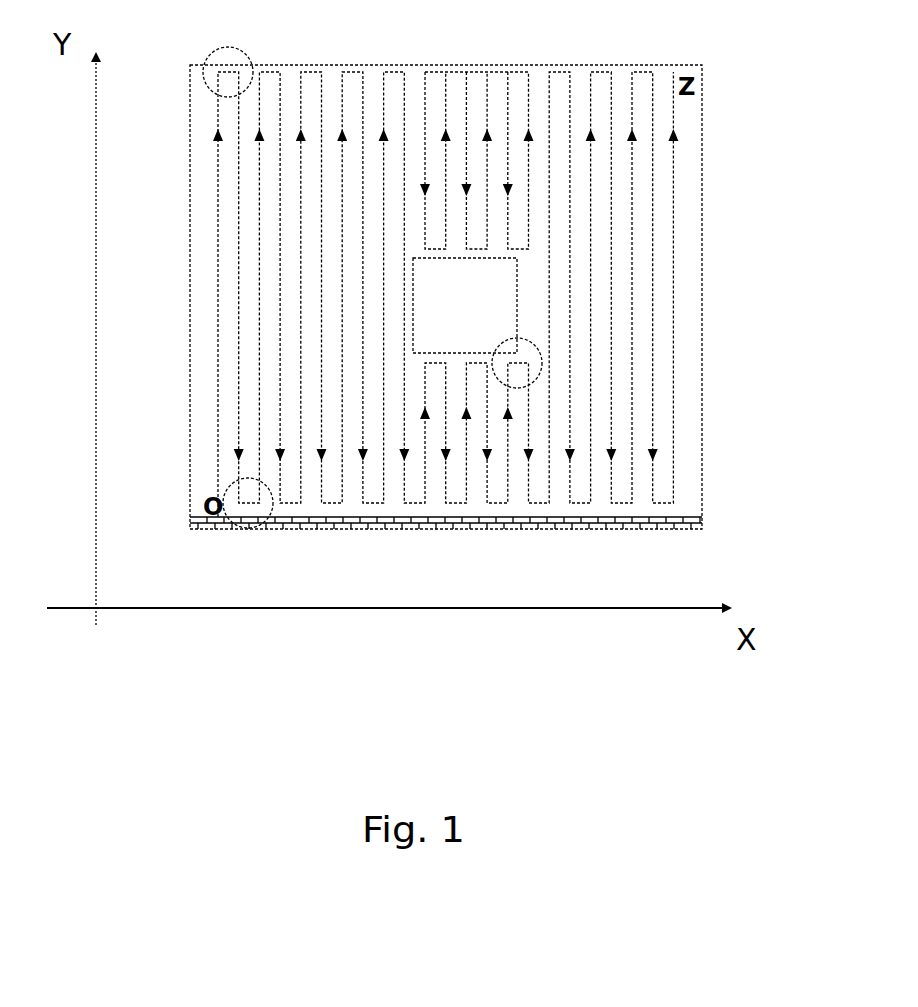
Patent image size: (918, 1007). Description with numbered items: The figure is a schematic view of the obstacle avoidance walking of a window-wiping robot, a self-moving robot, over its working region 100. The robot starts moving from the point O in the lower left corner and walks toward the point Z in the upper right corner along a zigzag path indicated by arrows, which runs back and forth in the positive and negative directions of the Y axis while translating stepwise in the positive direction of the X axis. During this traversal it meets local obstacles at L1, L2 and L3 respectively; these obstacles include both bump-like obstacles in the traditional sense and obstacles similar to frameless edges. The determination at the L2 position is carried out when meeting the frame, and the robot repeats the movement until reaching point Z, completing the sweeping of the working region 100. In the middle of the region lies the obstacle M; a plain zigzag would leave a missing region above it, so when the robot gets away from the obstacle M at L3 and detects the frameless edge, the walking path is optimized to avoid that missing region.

The working region 100 is at (767, 155).
The obstacle M is at (465, 305).
The local obstacle position L1 is at (208, 58).
The local obstacle position L2 is at (236, 527).
The local obstacle position L3 is at (542, 373).